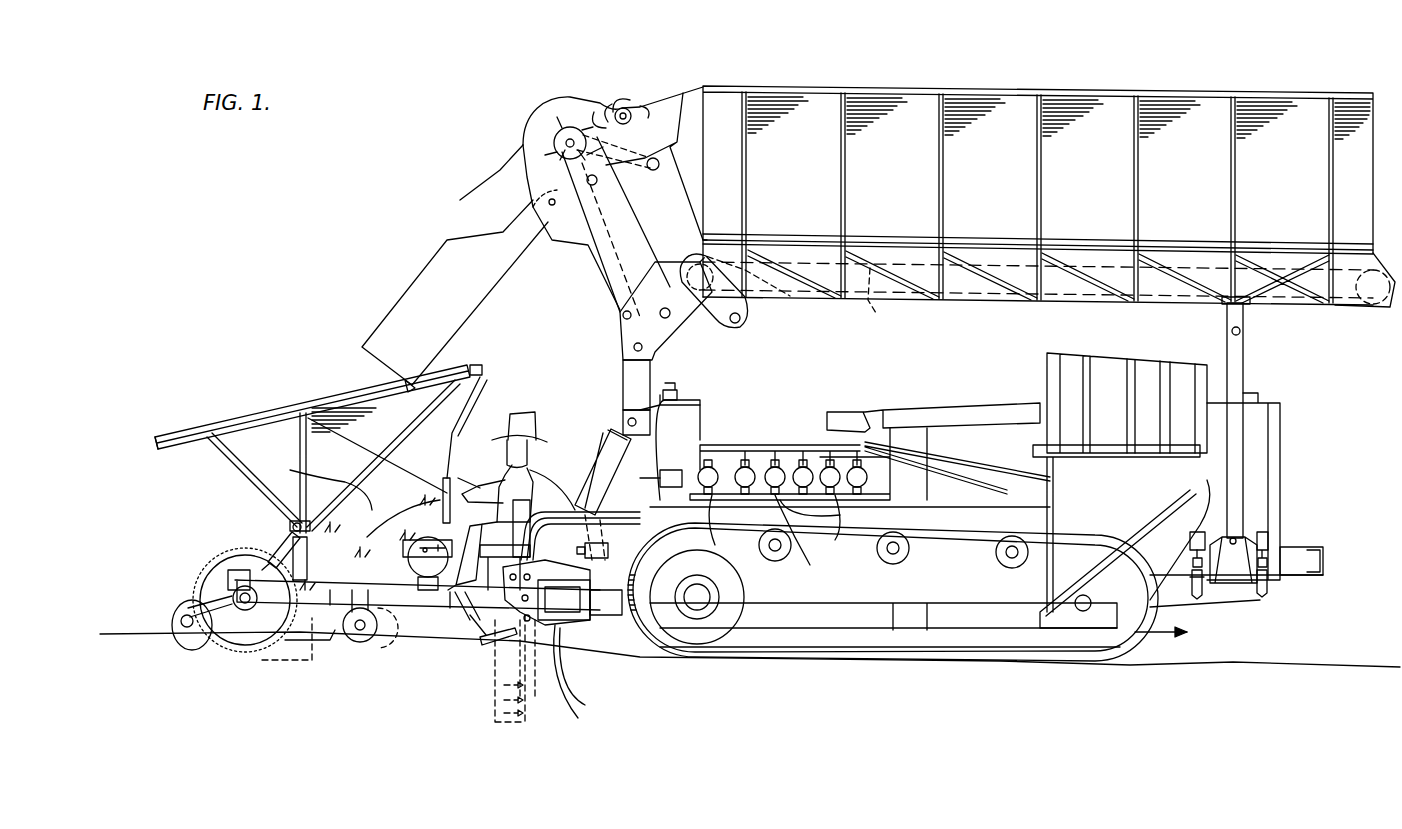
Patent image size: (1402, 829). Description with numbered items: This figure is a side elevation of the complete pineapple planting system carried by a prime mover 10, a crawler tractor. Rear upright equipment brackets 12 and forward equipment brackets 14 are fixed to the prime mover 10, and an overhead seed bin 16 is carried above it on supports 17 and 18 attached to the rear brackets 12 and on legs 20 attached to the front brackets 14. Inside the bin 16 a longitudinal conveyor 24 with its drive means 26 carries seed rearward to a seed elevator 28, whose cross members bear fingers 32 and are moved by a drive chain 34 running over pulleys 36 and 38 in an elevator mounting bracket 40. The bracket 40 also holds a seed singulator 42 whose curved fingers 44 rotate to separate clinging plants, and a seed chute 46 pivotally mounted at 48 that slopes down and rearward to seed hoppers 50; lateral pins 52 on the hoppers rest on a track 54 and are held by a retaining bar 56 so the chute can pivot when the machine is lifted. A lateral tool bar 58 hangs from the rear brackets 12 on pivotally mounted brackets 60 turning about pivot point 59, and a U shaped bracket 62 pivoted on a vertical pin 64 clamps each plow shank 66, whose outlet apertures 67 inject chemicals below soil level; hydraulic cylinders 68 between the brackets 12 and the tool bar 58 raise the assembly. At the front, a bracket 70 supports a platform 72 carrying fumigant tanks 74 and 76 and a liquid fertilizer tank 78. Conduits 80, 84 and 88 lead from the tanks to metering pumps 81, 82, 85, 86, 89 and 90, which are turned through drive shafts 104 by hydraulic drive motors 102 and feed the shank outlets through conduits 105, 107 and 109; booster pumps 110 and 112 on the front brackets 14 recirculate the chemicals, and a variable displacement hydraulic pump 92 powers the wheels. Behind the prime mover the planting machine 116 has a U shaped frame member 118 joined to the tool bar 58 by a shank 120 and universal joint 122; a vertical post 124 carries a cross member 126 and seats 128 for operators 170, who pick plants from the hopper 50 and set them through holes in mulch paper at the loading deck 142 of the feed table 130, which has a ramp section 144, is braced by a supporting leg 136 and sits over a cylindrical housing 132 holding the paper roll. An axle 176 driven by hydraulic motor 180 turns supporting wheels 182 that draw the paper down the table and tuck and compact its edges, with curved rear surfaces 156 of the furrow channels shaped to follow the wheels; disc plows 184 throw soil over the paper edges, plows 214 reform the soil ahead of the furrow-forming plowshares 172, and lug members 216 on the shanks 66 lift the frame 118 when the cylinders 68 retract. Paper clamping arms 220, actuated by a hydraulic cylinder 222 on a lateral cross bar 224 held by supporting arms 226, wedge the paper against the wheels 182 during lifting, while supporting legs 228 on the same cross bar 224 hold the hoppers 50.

The prime mover 10 is at (912, 400).
The upright equipment brackets 12 is at (630, 450).
The forward equipment brackets 14 is at (1237, 587).
The overhead seed bin 16 is at (833, 88).
The support 17 is at (623, 373).
The support 18 is at (650, 340).
The legs 20 is at (1243, 362).
The longitudinal conveyor 24 is at (881, 300).
The conveyor drive means 26 is at (745, 313).
The seed elevator 28 is at (550, 162).
The fingers 32 is at (555, 118).
The drive chain 34 is at (633, 228).
The pulley 36 is at (555, 140).
The pulley 38 is at (712, 330).
The elevator mounting bracket 40 is at (560, 102).
The seed singulator 42 is at (635, 98).
The curved fingers 44 is at (615, 90).
The seed chute 46 is at (430, 262).
The pivot 48 is at (545, 204).
The seed hoppers 50 is at (465, 395).
The lateral pins 52 is at (415, 380).
The track 54 is at (175, 448).
The retaining bar 56 is at (235, 440).
The lateral tool bar 58 is at (560, 640).
The pivot point 59 is at (612, 618).
The brackets 60 is at (630, 620).
The U shaped bracket 62 is at (580, 705).
The vertical pin 64 is at (565, 635).
The plow shank 66 is at (495, 690).
The outlet apertures 67 is at (498, 715).
The hydraulic cylinders 68 is at (620, 470).
The bracket 70 is at (1045, 590).
The platform 72 is at (1200, 470).
The tank 74 is at (1058, 355).
The tank 76 is at (1130, 358).
The tank 78 is at (1185, 362).
The conduit 80 is at (985, 475).
The metering pump 81 is at (855, 515).
The metering pump 82 is at (870, 480).
The conduit 84 is at (960, 465).
The metering pump 85 is at (778, 465).
The metering pump 86 is at (828, 465).
The conduit 88 is at (935, 420).
The metering pump 89 is at (695, 440).
The metering pump 90 is at (740, 445).
The variable displacement hydraulic pump 92 is at (577, 550).
The hydraulic drive motors 102 is at (668, 470).
The drive shafts 104 is at (589, 523).
The conduit 105 is at (835, 540).
The conduit 107 is at (812, 568).
The conduit 109 is at (715, 548).
The chemical booster pump 110 is at (1192, 598).
The chemical booster pump 112 is at (1270, 590).
The planting machine 116 is at (250, 485).
The U shaped frame member 118 is at (418, 612).
The shank 120 is at (480, 635).
The universal joint 122 is at (538, 665).
The vertical post 124 is at (478, 618).
The cross member 126 is at (512, 560).
The seats 128 is at (570, 468).
The feed table 130 is at (403, 505).
The open cylindrical housing 132 is at (410, 578).
The supporting leg 136 is at (435, 608).
The upper loading deck 142 is at (460, 478).
The ramp section 144 is at (375, 540).
The curved rear surfaces 156 is at (250, 612).
The operators 170 is at (530, 428).
The plowshares 172 is at (323, 640).
The axle 176 is at (243, 610).
The hydraulic drive motor 180 is at (232, 568).
The supporting wheels 182 is at (230, 572).
The disc plows 184 is at (178, 618).
The plows 214 is at (375, 645).
The lug members 216 is at (482, 645).
The paper clamping arms 220 is at (295, 660).
The hydraulic cylinder 222 is at (280, 555).
The lateral cross bar 224 is at (310, 525).
The supporting arms 226 is at (308, 552).
The supporting legs 228 is at (330, 480).